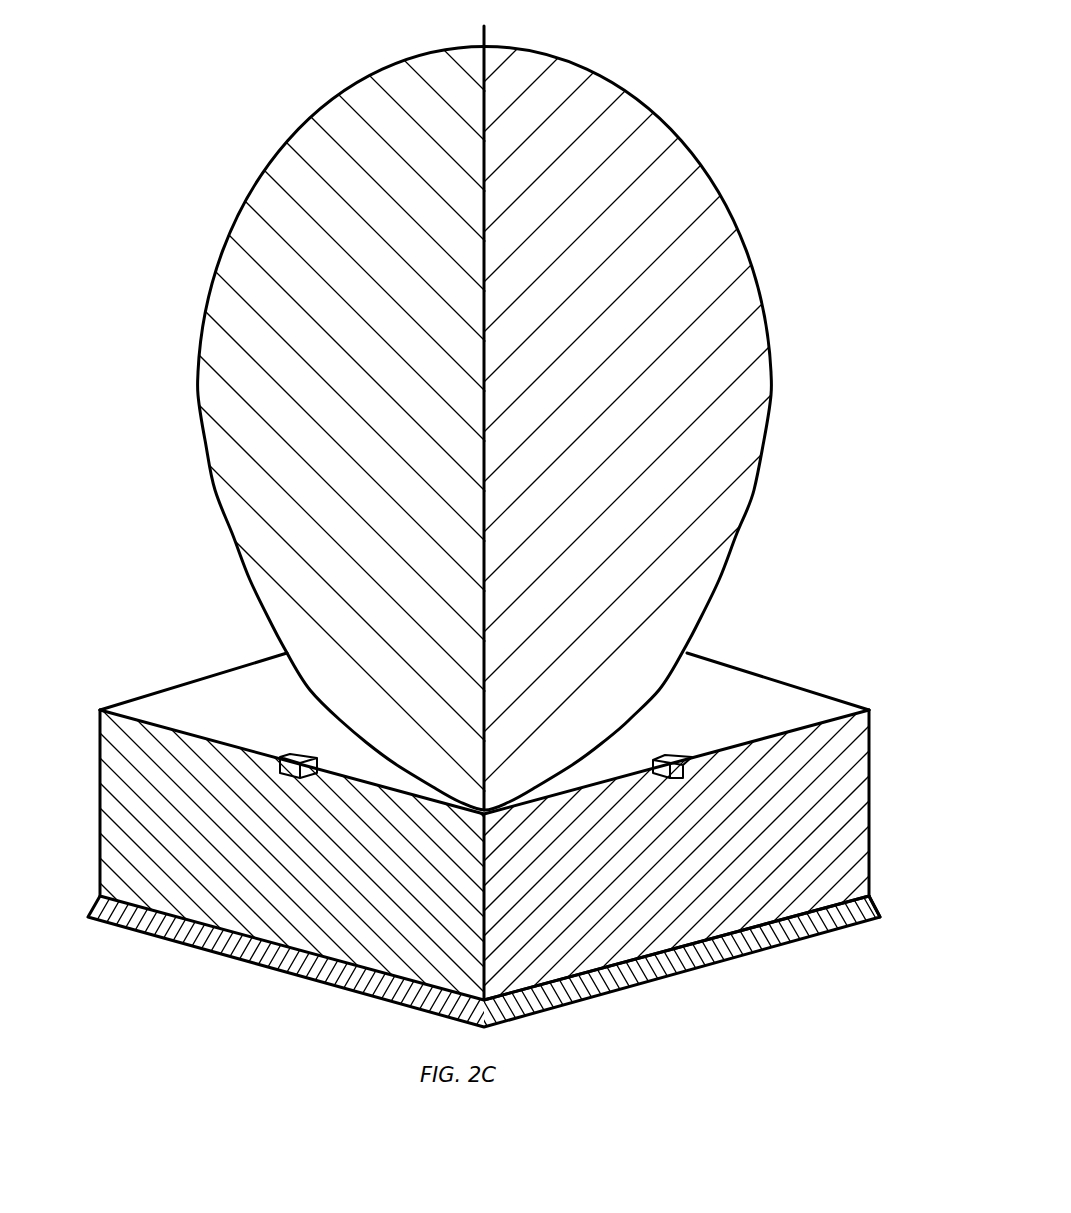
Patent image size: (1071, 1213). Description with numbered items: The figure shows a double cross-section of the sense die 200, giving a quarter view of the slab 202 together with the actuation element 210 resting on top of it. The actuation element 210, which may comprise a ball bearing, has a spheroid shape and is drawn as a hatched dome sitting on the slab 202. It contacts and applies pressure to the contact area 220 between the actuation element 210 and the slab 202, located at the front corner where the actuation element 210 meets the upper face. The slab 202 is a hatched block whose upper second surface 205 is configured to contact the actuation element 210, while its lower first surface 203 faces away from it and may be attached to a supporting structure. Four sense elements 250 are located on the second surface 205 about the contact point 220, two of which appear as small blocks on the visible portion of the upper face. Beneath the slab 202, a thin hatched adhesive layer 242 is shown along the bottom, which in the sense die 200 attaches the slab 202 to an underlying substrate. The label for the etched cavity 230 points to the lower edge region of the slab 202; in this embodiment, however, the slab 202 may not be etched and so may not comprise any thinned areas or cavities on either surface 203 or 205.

The sense die 200 is at (110, 405).
The slab 202 is at (843, 804).
The first surface 203 is at (873, 898).
The second surface 205 is at (786, 696).
The actuation element 210 is at (698, 541).
The contact area 220 is at (505, 788).
The etched cavity 230 is at (596, 983).
The adhesive layer 242 is at (838, 920).
The sense elements 250 is at (290, 755).